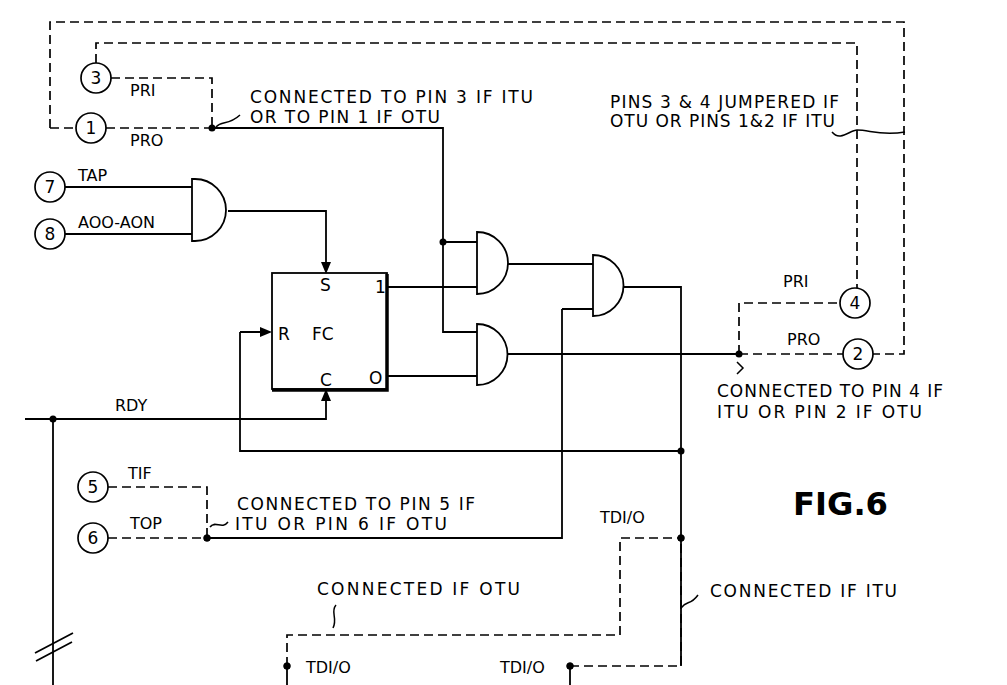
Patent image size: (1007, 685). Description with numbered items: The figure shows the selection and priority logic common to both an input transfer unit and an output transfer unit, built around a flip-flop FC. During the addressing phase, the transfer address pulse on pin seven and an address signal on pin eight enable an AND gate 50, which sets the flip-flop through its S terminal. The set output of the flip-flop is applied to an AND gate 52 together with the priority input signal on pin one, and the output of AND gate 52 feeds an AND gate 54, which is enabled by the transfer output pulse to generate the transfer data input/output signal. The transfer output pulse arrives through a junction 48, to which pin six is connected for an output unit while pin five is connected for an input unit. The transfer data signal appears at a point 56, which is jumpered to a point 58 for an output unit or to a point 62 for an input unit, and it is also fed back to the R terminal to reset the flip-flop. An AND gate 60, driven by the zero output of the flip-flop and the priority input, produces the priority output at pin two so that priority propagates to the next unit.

The junction 48 is at (207, 542).
The AND gate 50 is at (220, 197).
The AND gate 52 is at (505, 243).
The AND gate 54 is at (619, 264).
The point 56 is at (684, 539).
The point 58 is at (281, 666).
The AND gate 60 is at (505, 335).
The point 62 is at (573, 670).